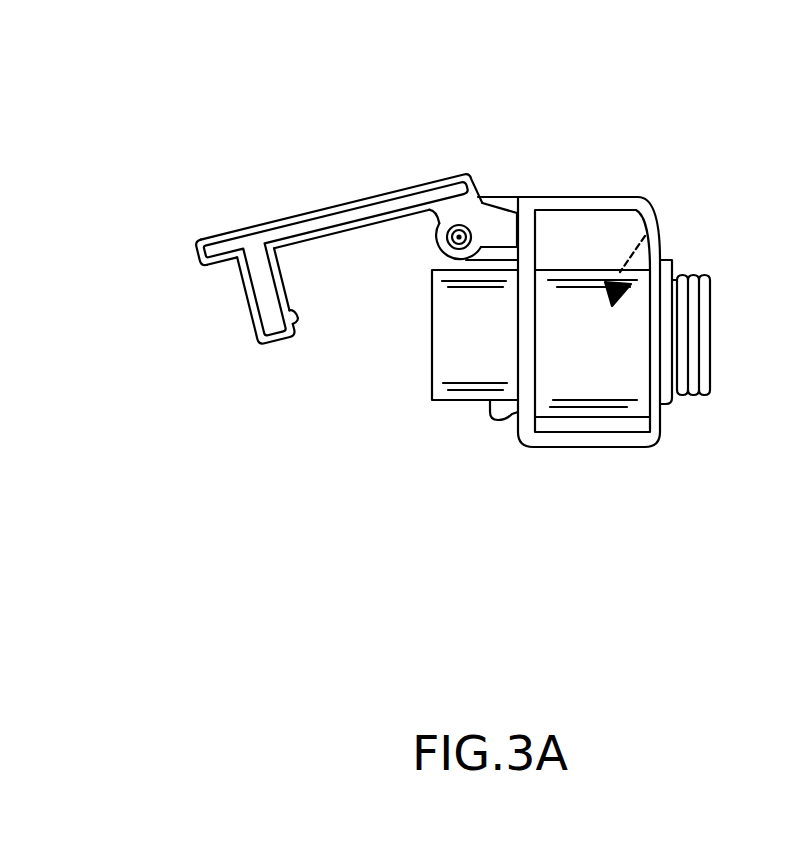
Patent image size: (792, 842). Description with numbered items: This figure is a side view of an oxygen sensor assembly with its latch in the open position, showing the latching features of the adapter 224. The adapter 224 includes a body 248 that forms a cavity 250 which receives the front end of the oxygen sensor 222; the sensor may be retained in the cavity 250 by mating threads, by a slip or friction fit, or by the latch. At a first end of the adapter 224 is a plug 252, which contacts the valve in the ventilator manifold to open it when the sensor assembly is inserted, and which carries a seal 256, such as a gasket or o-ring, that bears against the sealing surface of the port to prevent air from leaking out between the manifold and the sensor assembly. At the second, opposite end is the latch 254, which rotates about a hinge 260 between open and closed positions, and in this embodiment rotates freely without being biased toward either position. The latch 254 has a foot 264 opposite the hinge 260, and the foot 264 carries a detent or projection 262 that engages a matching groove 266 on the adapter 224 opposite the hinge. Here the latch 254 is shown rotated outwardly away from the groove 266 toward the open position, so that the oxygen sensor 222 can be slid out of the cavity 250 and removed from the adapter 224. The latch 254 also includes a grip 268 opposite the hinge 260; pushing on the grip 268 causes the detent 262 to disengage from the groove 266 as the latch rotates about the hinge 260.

The oxygen sensor 222 is at (478, 343).
The adapter 224 is at (568, 250).
The body 248 is at (559, 223).
The cavity 250 is at (652, 232).
The plug 252 is at (667, 407).
The latch 254 is at (353, 200).
The seal 256 is at (693, 276).
The hinge 260 is at (458, 236).
The detent 262 is at (298, 327).
The foot 264 is at (267, 293).
The groove 266 is at (512, 420).
The grip 268 is at (191, 255).